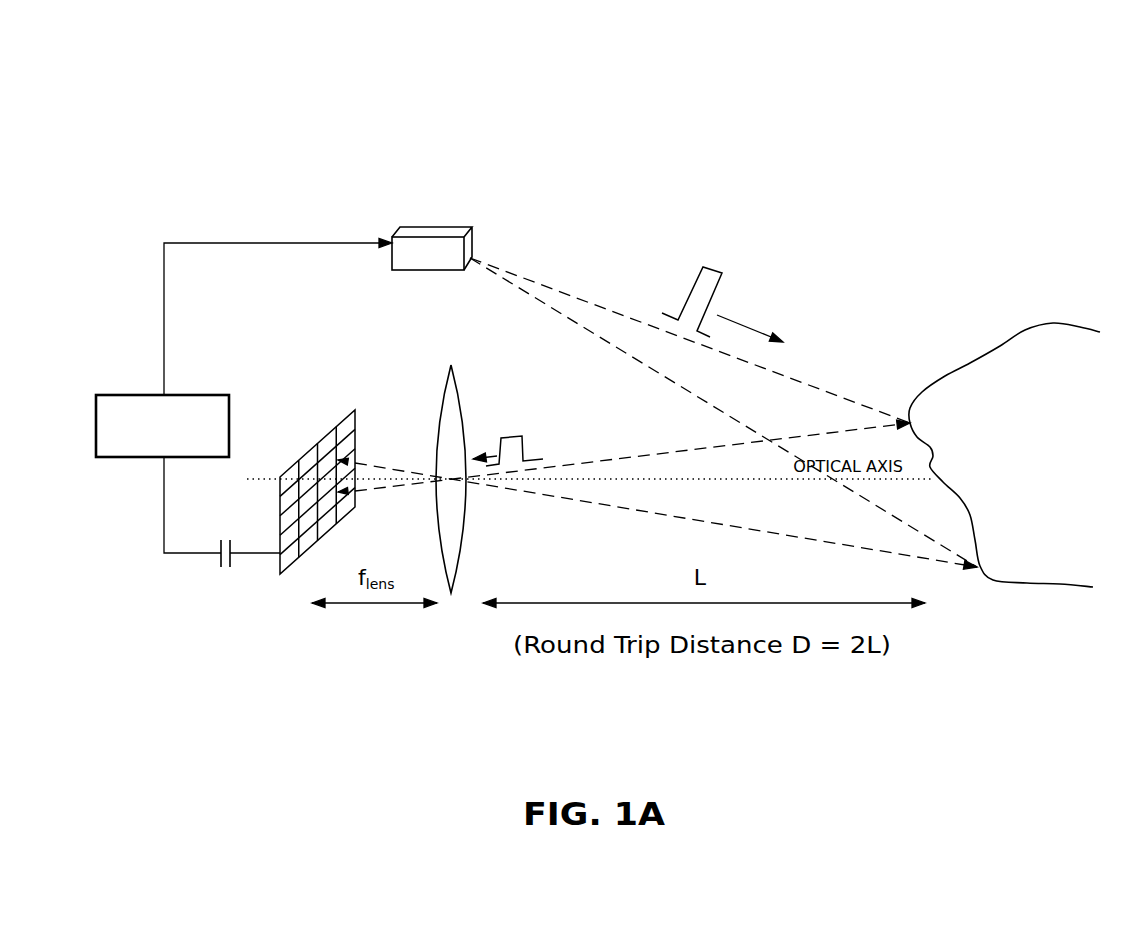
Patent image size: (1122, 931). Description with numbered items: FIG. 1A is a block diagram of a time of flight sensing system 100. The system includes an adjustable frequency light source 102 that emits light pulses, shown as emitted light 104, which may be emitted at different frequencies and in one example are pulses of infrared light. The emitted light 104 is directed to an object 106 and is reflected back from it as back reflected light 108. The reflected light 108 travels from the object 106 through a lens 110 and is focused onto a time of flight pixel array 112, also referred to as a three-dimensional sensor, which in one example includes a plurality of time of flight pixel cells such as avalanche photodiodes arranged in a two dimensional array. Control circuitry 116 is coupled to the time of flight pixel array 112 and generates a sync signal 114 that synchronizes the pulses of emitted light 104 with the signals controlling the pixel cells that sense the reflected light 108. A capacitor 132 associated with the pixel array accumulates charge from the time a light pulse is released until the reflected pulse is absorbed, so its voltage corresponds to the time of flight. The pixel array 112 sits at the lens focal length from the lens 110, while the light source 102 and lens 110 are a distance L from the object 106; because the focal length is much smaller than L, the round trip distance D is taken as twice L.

The time of flight sensing system 100 is at (660, 45).
The light source 102 is at (485, 238).
The emitted light 104 is at (695, 258).
The object 106 is at (955, 368).
The back reflected light 108 is at (502, 437).
The lens 110 is at (438, 398).
The time of flight pixel array 112 is at (293, 455).
The sync signal 114 is at (195, 235).
The control circuitry 116 is at (139, 394).
The capacitor 132 is at (233, 566).